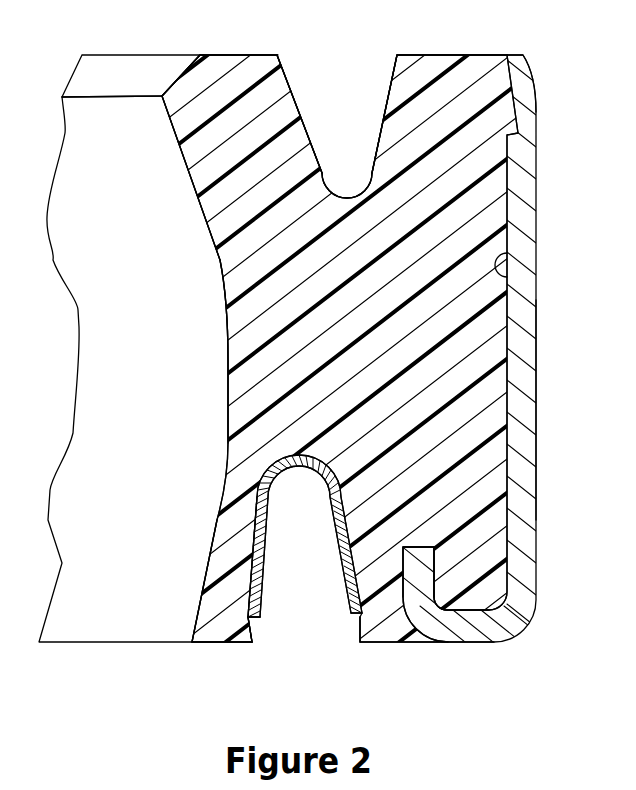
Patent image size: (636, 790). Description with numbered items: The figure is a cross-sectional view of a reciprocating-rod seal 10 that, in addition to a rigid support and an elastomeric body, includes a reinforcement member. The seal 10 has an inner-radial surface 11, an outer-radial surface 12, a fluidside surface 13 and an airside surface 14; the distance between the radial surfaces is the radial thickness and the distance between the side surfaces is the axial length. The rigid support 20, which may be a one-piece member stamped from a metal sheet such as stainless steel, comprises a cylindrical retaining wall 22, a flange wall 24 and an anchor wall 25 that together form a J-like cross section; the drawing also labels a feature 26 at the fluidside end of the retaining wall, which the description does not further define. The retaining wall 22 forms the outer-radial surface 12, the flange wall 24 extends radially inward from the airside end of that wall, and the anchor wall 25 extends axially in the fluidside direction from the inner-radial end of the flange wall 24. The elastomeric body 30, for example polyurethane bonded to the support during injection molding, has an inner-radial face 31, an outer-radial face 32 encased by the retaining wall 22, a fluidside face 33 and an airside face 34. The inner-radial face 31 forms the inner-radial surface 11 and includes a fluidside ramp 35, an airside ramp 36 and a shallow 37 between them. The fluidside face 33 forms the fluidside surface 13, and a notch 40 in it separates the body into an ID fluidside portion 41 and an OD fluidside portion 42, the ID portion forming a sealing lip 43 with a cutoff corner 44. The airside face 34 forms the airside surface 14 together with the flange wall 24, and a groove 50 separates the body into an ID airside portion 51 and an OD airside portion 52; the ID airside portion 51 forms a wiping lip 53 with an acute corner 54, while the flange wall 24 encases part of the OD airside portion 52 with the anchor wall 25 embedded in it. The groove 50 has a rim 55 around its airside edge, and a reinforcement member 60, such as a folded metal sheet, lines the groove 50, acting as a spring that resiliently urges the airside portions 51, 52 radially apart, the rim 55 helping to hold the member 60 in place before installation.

The reciprocating-rod seal 10 is at (100, 40).
The inner-radial surface 11 is at (150, 307).
The outer-radial surface 12 is at (564, 381).
The fluidside surface 13 is at (347, 57).
The airside surface 14 is at (341, 665).
The rigid support 20 is at (559, 568).
The cylindrical retaining wall 22 is at (530, 456).
The flange wall 24 is at (488, 643).
The anchor wall 25 is at (403, 553).
The top tab of insert 26 is at (536, 97).
The elastomeric body 30 is at (204, 455).
The inner-radial face 31 is at (159, 261).
The outer-radial face 32 is at (505, 253).
The fluidside face 33 is at (293, 50).
The airside face 34 is at (295, 673).
The fluidside ramp 35 is at (180, 146).
The airside ramp 36 is at (220, 550).
The shallow 37 is at (228, 352).
The notch 40 is at (324, 132).
The ID fluidside portion 41 is at (248, 179).
The OD fluidside portion 42 is at (434, 139).
The sealing lip 43 is at (188, 117).
The cutoff corner 44 is at (180, 74).
The groove 50 is at (294, 571).
The ID airside portion 51 is at (224, 519).
The OD airside portion 52 is at (455, 549).
The wiping lip 53 is at (213, 624).
The acute corner 54 is at (190, 640).
The rim 55 is at (255, 645).
The reinforcement member 60 is at (315, 468).